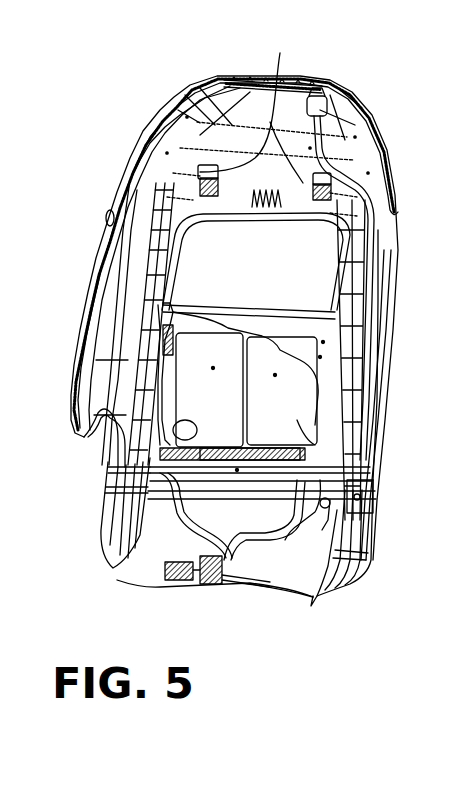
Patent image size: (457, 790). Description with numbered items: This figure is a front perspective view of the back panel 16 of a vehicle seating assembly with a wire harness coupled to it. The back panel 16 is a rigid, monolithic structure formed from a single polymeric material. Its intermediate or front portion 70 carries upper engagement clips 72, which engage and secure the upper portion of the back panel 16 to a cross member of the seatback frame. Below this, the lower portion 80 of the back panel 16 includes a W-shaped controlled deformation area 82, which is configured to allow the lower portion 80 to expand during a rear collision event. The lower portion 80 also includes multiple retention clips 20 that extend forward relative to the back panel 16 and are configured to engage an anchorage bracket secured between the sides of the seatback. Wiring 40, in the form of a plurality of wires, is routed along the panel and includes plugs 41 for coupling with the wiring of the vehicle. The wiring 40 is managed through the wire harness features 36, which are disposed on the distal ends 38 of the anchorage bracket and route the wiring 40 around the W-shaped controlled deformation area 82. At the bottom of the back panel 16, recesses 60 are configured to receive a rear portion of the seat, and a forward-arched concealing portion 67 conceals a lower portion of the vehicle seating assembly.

The back panel 16 is at (0, 73).
The front portion 70 is at (0, 125).
The lower portion 80 is at (0, 245).
The W-shaped controlled deformation area 82 is at (0, 294).
The upper engagement clips 72 is at (270, 245).
The wiring 40 is at (350, 370).
The retention clip 20 is at (262, 492).
The wire harness features 36 is at (100, 477).
The distal ends 38 is at (163, 458).
The recesses 60 is at (93, 450).
The plugs 41 is at (173, 578).
The forward-arched concealing portion 67 is at (298, 570).